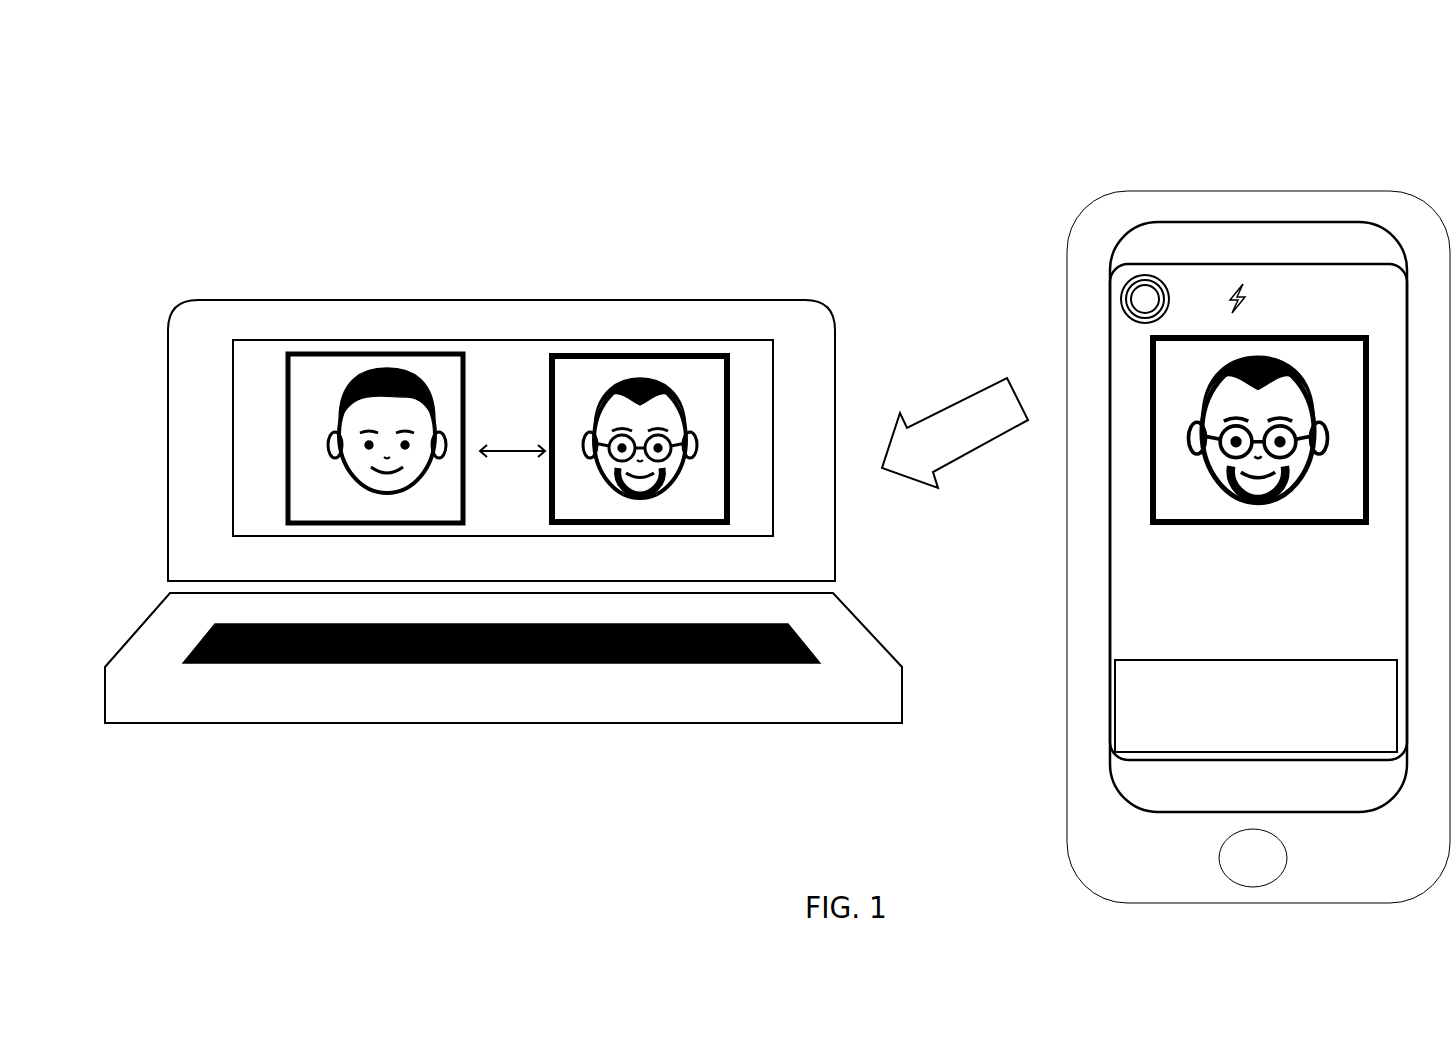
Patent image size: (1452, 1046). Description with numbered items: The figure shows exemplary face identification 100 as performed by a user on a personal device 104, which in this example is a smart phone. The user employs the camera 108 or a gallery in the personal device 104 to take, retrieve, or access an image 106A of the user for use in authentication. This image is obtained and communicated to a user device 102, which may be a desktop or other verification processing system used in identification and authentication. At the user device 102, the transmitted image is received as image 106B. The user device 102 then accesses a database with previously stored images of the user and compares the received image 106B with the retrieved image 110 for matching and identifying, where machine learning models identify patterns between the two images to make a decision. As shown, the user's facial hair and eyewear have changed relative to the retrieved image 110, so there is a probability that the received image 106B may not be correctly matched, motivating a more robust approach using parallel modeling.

The face identification 100 is at (1150, 137).
The user device 102 is at (655, 298).
The personal device 104 is at (1373, 192).
The image 106A is at (1153, 394).
The received image 106B is at (597, 356).
The camera 108 is at (1113, 723).
The retrieved image 110 is at (358, 357).